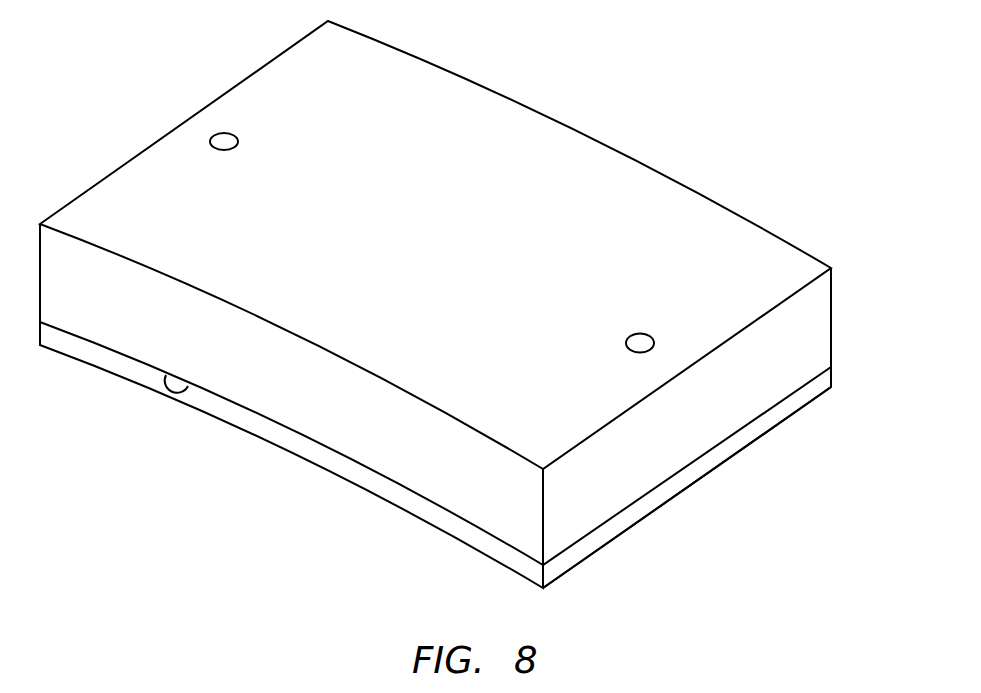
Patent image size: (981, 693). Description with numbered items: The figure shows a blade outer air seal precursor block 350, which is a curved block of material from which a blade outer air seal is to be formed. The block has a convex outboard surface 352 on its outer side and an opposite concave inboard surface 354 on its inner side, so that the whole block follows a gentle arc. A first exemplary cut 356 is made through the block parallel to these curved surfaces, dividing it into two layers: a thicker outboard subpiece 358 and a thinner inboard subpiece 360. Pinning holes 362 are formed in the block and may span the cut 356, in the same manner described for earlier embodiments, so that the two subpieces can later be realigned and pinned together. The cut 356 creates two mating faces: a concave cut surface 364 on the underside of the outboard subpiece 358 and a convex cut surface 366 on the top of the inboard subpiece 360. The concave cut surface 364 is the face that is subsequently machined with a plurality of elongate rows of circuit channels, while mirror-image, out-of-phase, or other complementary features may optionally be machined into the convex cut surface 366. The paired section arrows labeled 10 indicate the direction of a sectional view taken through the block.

The blade outer air seal precursor block 350 is at (712, 118).
The convex outboard surface 352 is at (705, 217).
The concave inboard surface 354 is at (316, 466).
The first exemplary cut 356 is at (583, 540).
The outboard subpiece 358 is at (810, 322).
The inboard subpiece 360 is at (820, 384).
The pinning holes 362 is at (643, 338).
The concave cut surface 364 is at (187, 384).
The convex cut surface 366 is at (277, 417).
The section line indicator 10 is at (762, 212).